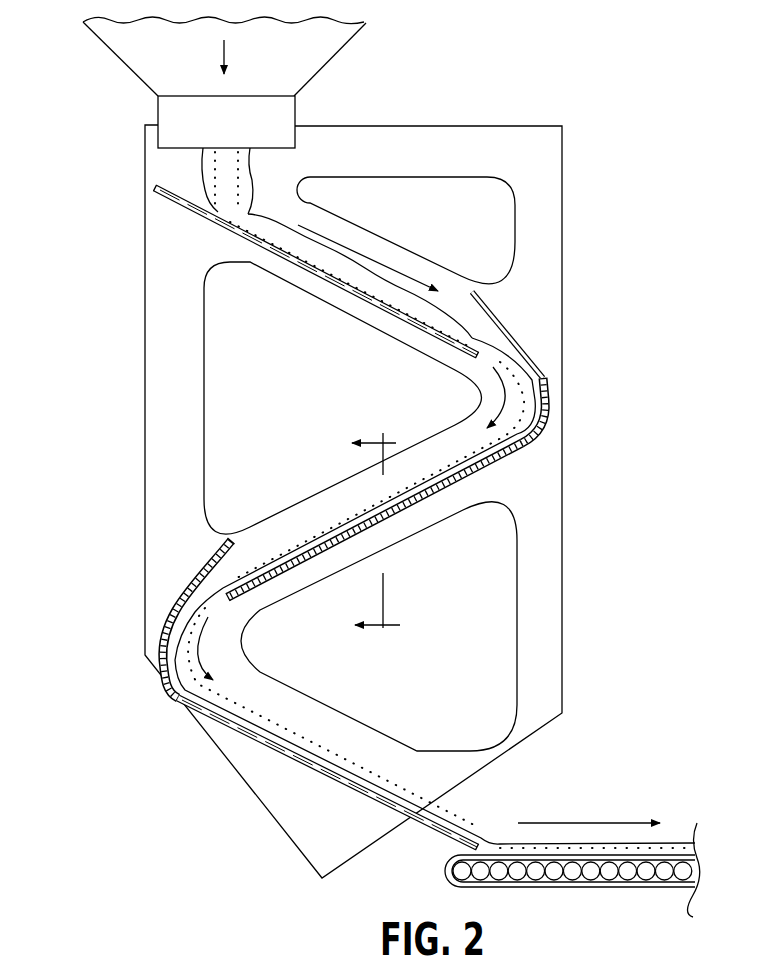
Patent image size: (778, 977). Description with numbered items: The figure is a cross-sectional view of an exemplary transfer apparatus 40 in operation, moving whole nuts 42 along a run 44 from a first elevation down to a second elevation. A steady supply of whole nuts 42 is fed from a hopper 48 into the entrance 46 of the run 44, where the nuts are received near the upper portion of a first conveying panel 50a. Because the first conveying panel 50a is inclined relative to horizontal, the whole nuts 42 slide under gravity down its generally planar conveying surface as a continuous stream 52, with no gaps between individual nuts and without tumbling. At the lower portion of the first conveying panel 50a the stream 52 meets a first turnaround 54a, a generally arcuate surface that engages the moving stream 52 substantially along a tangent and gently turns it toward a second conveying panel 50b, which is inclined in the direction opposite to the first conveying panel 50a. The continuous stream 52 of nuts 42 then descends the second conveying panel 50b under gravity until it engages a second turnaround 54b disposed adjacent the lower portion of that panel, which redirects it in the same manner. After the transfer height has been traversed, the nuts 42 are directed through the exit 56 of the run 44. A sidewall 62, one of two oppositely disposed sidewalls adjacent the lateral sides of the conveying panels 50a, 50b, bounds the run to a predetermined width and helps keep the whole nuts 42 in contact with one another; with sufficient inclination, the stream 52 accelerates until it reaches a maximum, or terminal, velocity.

The transfer apparatus 40 is at (641, 87).
The whole nuts 42 is at (203, 182).
The run 44 is at (550, 337).
The entrance 46 is at (156, 148).
The hopper 48 is at (327, 62).
The first conveying panel 50a is at (340, 285).
The second conveying panel 50b is at (464, 484).
The continuous stream 52 is at (322, 526).
The first turnaround 54a is at (541, 424).
The second turnaround 54b is at (158, 655).
The exit 56 is at (478, 810).
The second sidewall 62 is at (452, 126).